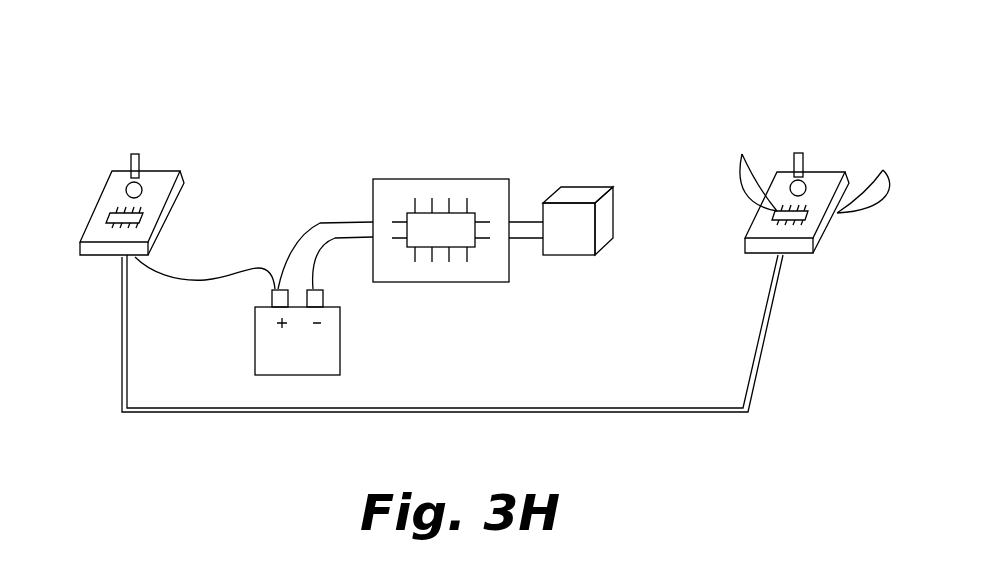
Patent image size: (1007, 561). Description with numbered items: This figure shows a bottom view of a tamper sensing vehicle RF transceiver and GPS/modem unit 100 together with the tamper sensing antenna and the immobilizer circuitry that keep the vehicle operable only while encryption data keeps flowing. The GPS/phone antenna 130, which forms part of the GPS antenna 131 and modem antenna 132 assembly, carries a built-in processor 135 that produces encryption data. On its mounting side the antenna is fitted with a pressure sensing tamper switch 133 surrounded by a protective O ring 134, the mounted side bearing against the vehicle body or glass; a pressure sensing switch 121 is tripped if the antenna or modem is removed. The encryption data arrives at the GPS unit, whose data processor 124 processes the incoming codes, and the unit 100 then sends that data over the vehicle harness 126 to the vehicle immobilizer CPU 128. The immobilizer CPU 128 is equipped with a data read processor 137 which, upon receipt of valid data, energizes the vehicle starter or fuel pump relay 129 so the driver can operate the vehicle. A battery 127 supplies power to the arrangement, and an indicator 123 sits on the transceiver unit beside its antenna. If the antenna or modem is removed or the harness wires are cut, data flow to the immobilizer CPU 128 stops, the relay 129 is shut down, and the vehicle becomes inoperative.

The tamper sensing vehicle RF transceiver / GPS modem unit 100 is at (112, 175).
The pressure sensing switch 121 is at (135, 152).
The indicator light 123 is at (142, 187).
The data processor 124 is at (108, 217).
The vehicle harness 126 is at (205, 281).
The battery 127 is at (340, 357).
The vehicle immobilizer CPU 128 is at (475, 247).
The vehicle starter or fuel pump relay 129 is at (590, 187).
The GPS/phone antenna 130 is at (743, 247).
The GPS antenna 131 is at (887, 172).
The modem antenna 132 is at (740, 170).
The pressure sensing tamper switch 133 is at (793, 153).
The protective O ring 134 is at (804, 184).
The built-in processor 135 is at (810, 225).
The data read processor 137 is at (450, 179).